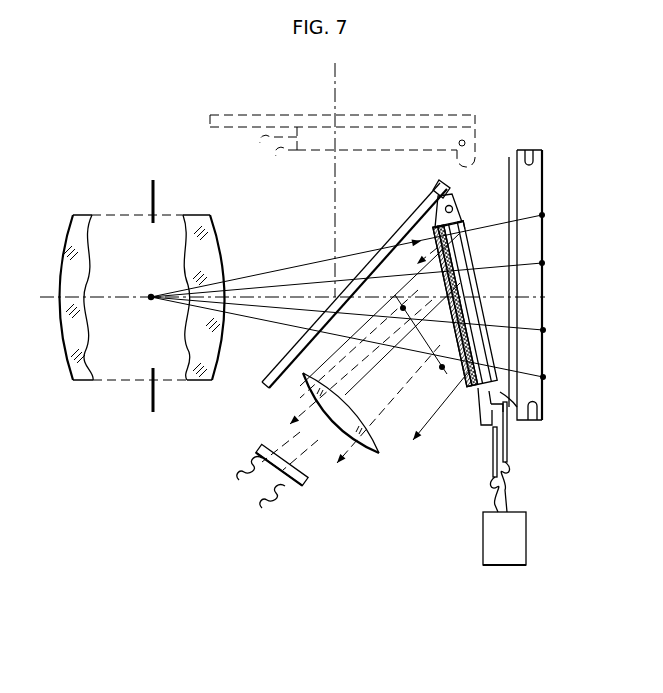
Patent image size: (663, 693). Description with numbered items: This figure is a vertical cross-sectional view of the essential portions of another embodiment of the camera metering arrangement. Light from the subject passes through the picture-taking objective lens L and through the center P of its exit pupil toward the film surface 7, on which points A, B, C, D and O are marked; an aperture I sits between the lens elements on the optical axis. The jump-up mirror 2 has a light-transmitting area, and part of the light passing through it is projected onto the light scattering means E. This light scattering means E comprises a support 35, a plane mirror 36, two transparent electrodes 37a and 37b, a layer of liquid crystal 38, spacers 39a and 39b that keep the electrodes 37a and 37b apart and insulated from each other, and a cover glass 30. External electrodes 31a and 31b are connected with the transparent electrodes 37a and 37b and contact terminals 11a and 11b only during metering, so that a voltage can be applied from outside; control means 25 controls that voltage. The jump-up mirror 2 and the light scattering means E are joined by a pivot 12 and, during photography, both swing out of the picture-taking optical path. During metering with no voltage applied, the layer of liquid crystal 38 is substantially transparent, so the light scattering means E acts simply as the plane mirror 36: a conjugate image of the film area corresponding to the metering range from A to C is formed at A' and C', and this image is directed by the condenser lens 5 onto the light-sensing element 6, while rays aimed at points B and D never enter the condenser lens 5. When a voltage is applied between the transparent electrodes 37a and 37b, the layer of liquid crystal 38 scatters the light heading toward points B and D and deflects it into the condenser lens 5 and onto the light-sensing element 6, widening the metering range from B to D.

The picture-taking objective lens L is at (80, 222).
The aperture stop I is at (155, 202).
The center of the exit pupil P is at (342, 296).
The jump-up mirror 2 is at (267, 374).
The pivot 12 is at (447, 193).
The spacer 39b is at (458, 212).
The light scattering means E is at (478, 232).
The support 35 is at (470, 249).
The plane mirror 36 is at (440, 283).
The transparent electrode 37b is at (477, 283).
The transparent electrode 37a is at (477, 305).
The layer of liquid crystal 38 is at (484, 334).
The cover glass 30 is at (453, 300).
The conjugate image point A' is at (387, 294).
The conjugate image point C' is at (443, 348).
The film surface 7 is at (543, 170).
The point on the film surface B is at (542, 215).
The point on the film surface A is at (563, 258).
The point on the film surface O is at (568, 295).
The point on the film surface C is at (564, 332).
The point on the film surface D is at (543, 377).
The external electrode 31a is at (500, 391).
The external electrode 31b is at (500, 430).
The spacer 39a is at (484, 432).
The terminal 11b is at (493, 460).
The terminal 11a is at (508, 462).
The control means 25 is at (528, 530).
The condenser lens 5 is at (375, 455).
The light-sensing element 6 is at (298, 497).